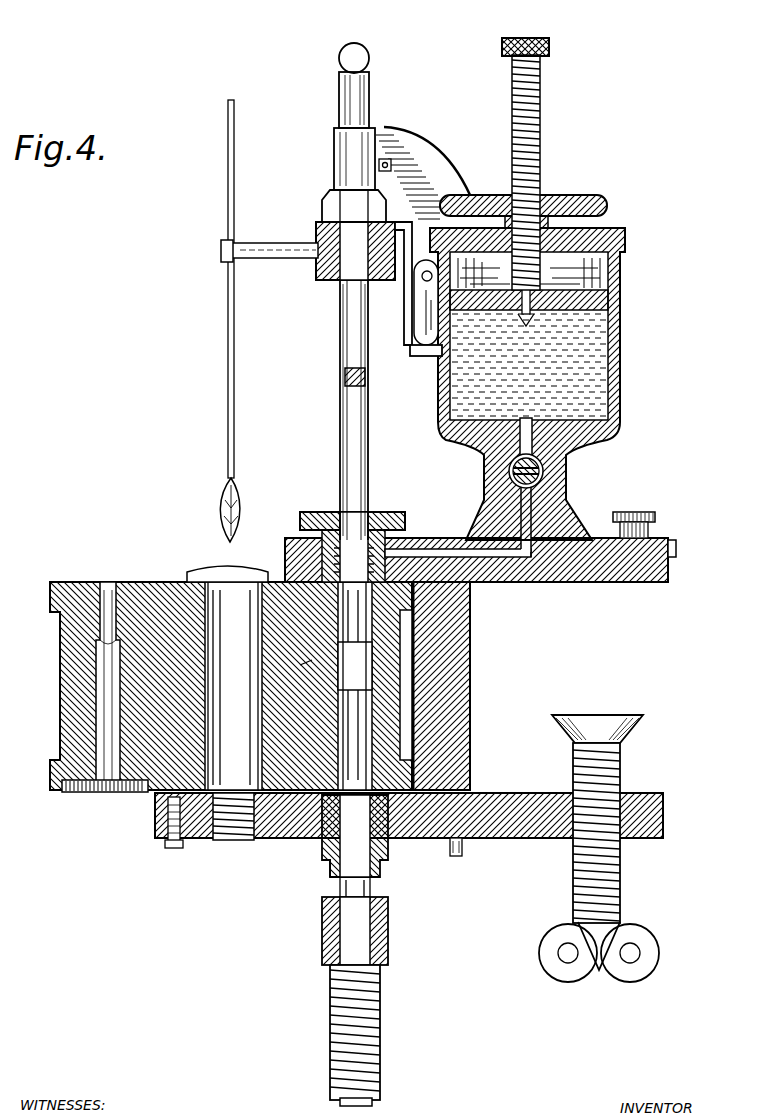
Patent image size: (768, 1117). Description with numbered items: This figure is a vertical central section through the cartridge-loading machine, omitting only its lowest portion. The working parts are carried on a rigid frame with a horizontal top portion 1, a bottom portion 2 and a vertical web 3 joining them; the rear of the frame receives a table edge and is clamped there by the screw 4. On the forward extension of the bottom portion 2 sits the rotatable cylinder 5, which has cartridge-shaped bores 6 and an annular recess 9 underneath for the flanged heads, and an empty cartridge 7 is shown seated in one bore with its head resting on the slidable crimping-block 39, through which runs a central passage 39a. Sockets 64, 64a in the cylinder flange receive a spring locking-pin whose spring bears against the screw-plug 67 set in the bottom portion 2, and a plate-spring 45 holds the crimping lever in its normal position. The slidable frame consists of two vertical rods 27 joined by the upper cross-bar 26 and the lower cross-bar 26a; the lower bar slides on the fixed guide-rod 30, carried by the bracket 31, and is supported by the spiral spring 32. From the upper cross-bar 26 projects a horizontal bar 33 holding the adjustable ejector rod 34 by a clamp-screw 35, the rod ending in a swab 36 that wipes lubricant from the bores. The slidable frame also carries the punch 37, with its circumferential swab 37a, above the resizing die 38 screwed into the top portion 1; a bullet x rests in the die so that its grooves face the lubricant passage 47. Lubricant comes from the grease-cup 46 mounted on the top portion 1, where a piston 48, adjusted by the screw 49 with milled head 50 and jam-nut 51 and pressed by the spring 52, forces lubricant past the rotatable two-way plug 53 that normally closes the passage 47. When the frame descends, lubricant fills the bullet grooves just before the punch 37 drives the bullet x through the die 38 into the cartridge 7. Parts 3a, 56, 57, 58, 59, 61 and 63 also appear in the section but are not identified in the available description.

The horizontal top portion 1 is at (285, 548).
The bottom portion 2 is at (262, 840).
The vertical web 3 is at (458, 681).
The column boss 3a is at (305, 668).
The screw 4 is at (620, 770).
The cylinder 5 is at (60, 664).
The bores 6 is at (118, 683).
The cartridge 7 is at (345, 731).
The annular recess 9 is at (110, 792).
The cross-bar 26 is at (316, 268).
The lower cross-bar 26a is at (324, 936).
The slidable rods 27 is at (372, 90).
The guide-rod 30 is at (374, 1100).
The bracket 31 is at (388, 906).
The spiral spring 32 is at (338, 1012).
The horizontal bar 33 is at (262, 242).
The rod 34 is at (228, 182).
The clamp-screw 35 is at (224, 256).
The swab 36 is at (242, 500).
The punch 37 is at (352, 330).
The circumferential swab 37a is at (345, 374).
The die 38 is at (322, 512).
The crimping-block 39 is at (324, 877).
The central passage 39a is at (325, 840).
The plate-spring 45 is at (460, 856).
The lubricant-holder 46 is at (614, 354).
The passage 47 is at (506, 525).
The piston 48 is at (612, 296).
The screw 49 is at (516, 106).
The milled head 50 is at (549, 46).
The jam-nut 51 is at (548, 200).
The spring 52 is at (612, 268).
The plug 53 is at (540, 468).
The lever 56 is at (418, 304).
The spring arc 57 is at (440, 178).
The stop bar 58 is at (414, 352).
The lever slot 59 is at (418, 326).
The stop 61 is at (674, 540).
The knob 63 is at (636, 512).
The sockets 64 is at (462, 794).
The sockets 64a is at (162, 812).
The screw-plug 67 is at (175, 848).
The bullet x is at (402, 531).